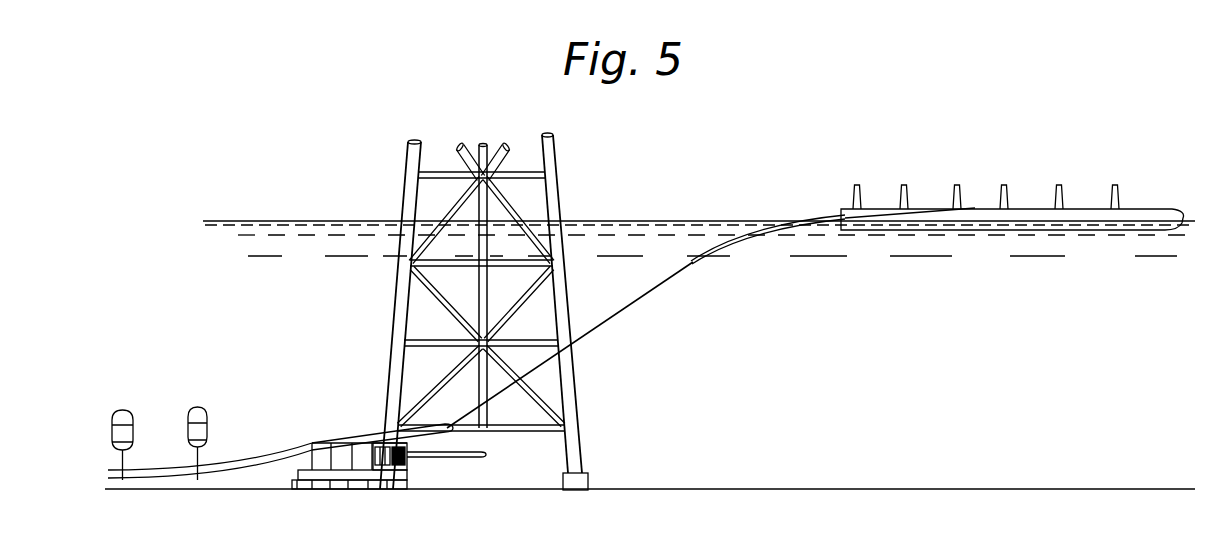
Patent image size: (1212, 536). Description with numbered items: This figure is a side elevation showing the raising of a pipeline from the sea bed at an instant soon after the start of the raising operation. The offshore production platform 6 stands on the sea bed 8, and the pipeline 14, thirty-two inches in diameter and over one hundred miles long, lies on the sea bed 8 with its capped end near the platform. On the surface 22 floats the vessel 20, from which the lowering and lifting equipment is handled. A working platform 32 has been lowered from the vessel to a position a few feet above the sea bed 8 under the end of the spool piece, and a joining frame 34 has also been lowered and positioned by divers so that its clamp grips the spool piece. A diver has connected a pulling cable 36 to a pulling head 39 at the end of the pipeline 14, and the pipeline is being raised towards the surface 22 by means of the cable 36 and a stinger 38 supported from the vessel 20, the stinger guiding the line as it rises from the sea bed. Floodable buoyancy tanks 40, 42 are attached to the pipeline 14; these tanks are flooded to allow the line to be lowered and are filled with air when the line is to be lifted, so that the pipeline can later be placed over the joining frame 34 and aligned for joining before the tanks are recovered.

The offshore production platform 6 is at (555, 200).
The sea bed 8 is at (665, 489).
The pipeline 14 is at (232, 463).
The vessel 20 is at (1077, 213).
The surface 22 is at (712, 221).
The working platform 32 is at (408, 486).
The joining frame 34 is at (313, 442).
The pulling cable 36 is at (627, 308).
The stinger 38 is at (758, 237).
The pulling head 39 is at (450, 425).
The floodable buoyancy tank 40 is at (207, 425).
The floodable buoyancy tank 42 is at (133, 425).